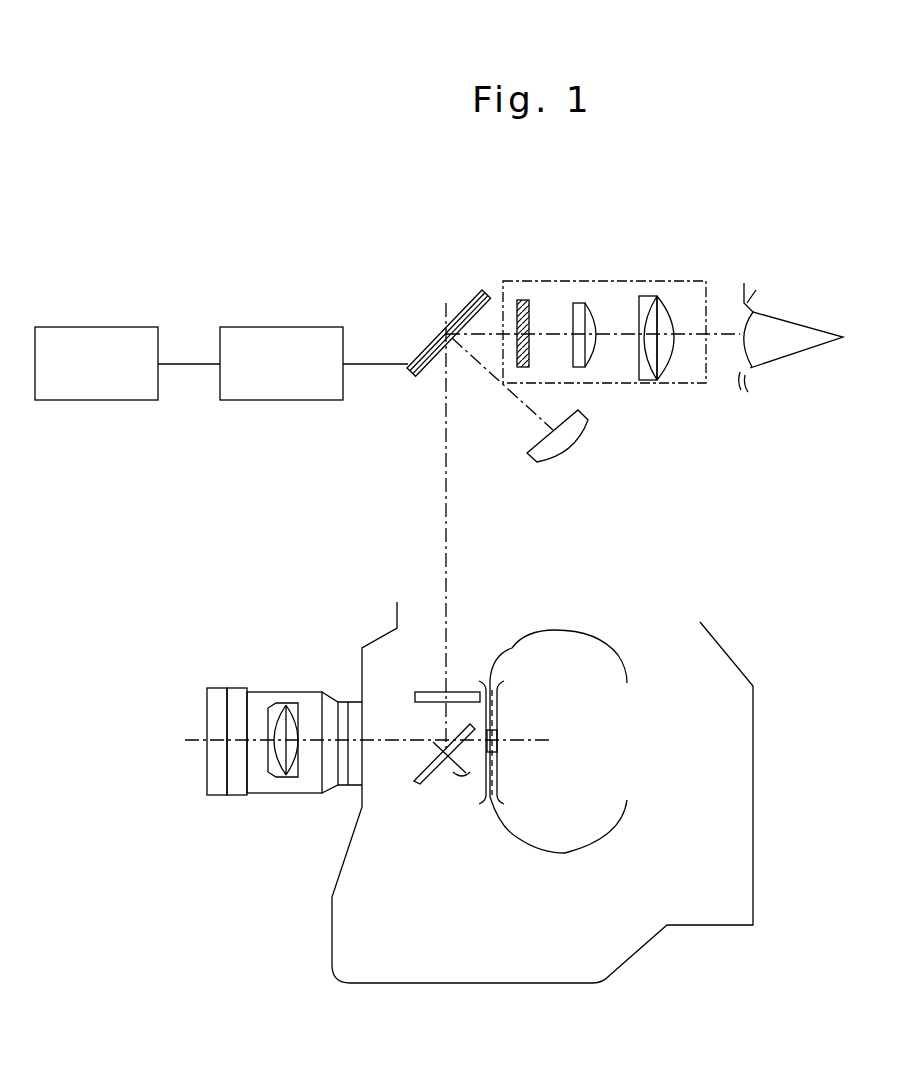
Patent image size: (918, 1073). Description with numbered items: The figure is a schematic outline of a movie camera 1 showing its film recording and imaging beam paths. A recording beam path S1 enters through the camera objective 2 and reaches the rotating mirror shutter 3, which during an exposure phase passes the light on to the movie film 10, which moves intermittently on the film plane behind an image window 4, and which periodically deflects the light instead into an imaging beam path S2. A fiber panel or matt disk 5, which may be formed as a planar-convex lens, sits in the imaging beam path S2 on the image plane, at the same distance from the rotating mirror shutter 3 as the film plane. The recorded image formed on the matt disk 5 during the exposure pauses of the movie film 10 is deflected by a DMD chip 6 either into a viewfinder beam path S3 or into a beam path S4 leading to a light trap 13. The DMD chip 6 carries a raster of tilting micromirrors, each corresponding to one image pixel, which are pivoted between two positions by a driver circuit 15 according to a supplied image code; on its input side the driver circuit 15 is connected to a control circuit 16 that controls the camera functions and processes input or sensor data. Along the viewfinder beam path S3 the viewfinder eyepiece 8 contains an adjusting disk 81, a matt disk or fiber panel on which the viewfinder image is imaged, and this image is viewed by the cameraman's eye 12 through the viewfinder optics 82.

The movie camera 1 is at (728, 888).
The camera objective 2 is at (253, 778).
The rotating mirror shutter 3 is at (425, 780).
The image window 4 is at (497, 730).
The matt disk 5 is at (418, 692).
The DMD chip 6 is at (437, 340).
The viewfinder eyepiece 8 is at (606, 295).
The adjusting disk 81 is at (522, 300).
The viewfinder optics 82 is at (648, 296).
The movie film 10 is at (553, 794).
The cameraman's eye 12 is at (777, 338).
The light trap 13 is at (570, 438).
The driver circuit 15 is at (281, 338).
The control circuit 16 is at (97, 345).
The recording beam path S1 is at (192, 742).
The imaging beam path S2 is at (445, 515).
The viewfinder beam path S3 is at (692, 333).
The beam path to light trap S4 is at (517, 400).